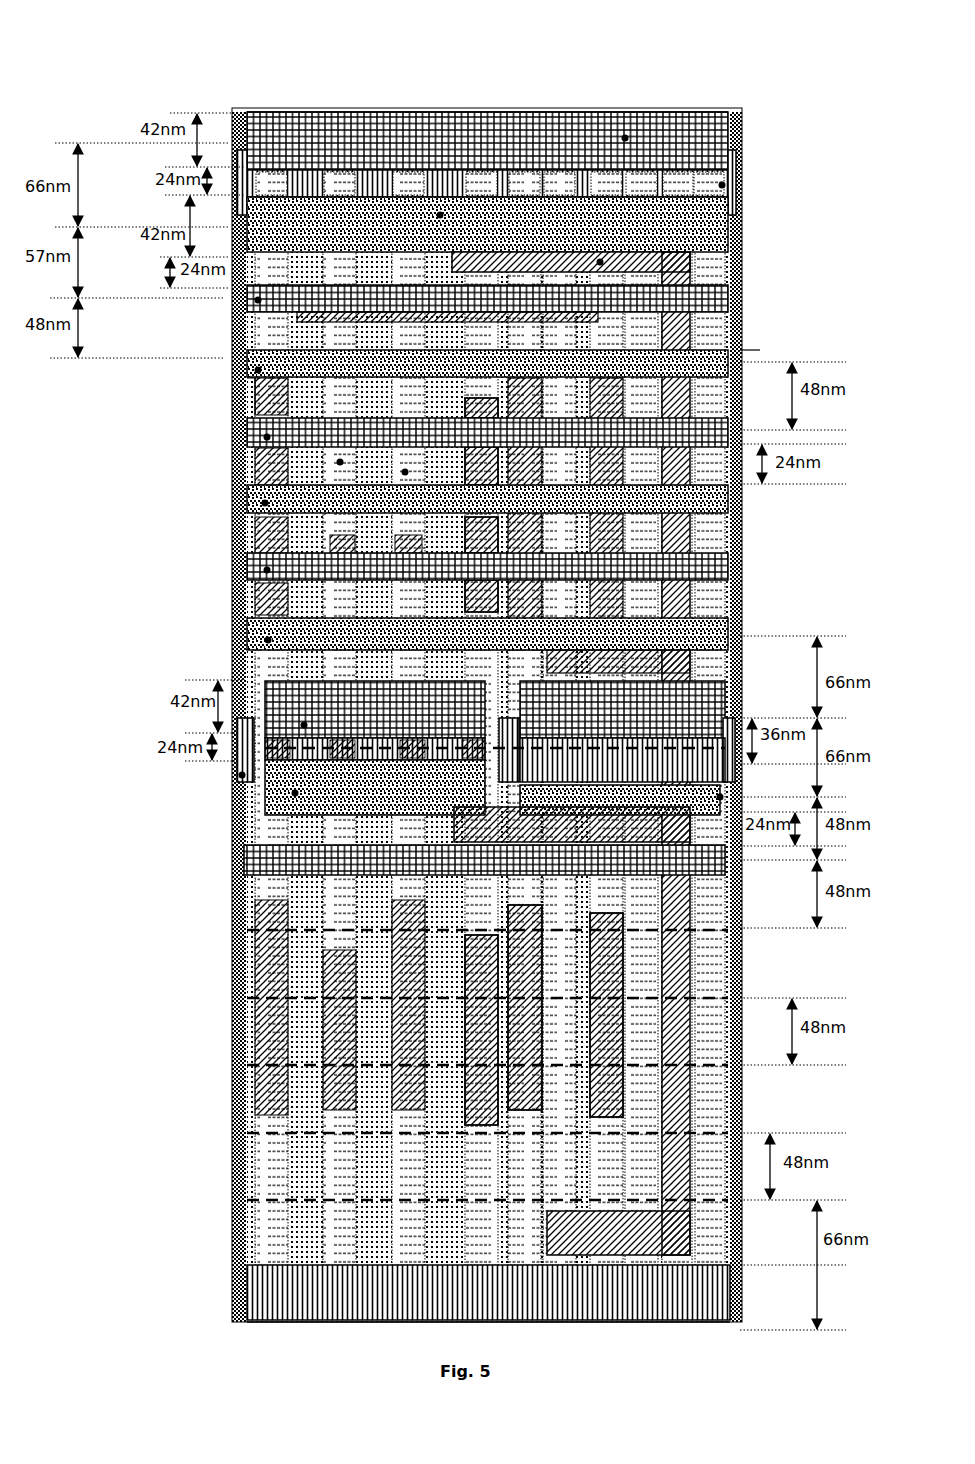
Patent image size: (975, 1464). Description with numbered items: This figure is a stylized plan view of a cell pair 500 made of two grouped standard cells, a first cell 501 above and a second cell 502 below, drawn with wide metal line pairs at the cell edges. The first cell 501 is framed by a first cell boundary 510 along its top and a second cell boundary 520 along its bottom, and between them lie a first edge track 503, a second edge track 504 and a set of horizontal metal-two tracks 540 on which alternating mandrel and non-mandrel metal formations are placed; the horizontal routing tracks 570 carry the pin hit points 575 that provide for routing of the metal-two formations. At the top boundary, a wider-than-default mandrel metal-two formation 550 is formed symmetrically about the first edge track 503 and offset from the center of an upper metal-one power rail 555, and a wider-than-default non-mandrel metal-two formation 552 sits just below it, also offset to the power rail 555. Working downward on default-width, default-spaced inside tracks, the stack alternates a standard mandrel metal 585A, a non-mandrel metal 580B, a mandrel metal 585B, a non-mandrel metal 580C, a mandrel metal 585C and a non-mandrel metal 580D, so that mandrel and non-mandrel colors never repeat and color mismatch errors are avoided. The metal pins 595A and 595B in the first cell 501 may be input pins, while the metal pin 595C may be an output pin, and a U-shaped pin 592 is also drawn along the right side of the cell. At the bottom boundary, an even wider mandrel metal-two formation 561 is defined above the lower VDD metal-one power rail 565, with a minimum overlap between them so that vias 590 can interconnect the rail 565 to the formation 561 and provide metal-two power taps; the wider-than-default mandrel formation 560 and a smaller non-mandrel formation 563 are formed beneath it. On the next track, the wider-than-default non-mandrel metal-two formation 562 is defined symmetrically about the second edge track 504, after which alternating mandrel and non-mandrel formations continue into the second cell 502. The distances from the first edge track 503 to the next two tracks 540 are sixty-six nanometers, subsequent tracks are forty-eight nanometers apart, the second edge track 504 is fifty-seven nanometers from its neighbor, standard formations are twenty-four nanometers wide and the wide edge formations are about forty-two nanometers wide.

The cell pair 500 is at (181, 32).
The first cell 501 is at (103, 99).
The second cell 502 is at (87, 1304).
The first edge track 503 is at (335, 111).
The second edge track 504 is at (246, 978).
The first cell boundary 510 is at (748, 114).
The second cell boundary 520 is at (219, 800).
The M2 tracks 540 is at (246, 1133).
The mandrel M2 metal formation 550 is at (635, 112).
The non-mandrel M2 metal formation 552 is at (463, 110).
The M1 power rail 555 is at (740, 186).
The mandrel M2 metal formation 560 is at (236, 785).
The mandrel M2 metal formation 561 is at (740, 668).
The non-mandrel M2 metal formation 562 is at (236, 855).
The non-mandrel M2 line 563 is at (740, 782).
The M1 power rail 565 is at (238, 776).
The routing tracks 570 is at (400, 472).
The pin hit points 575 is at (740, 530).
The non-mandrel M2 metal 580B is at (250, 372).
The non-mandrel M2 metal 580C is at (250, 500).
The non-mandrel M2 metal 580D is at (250, 640).
The mandrel M2 metal 585A is at (258, 302).
The mandrel M2 metal 585B is at (255, 440).
The mandrel M2 metal 585C is at (250, 570).
The vias 590 is at (736, 612).
The U-shaped pin 592 is at (605, 262).
The metal pin 595A is at (248, 395).
The metal pin 595B is at (248, 408).
The metal pin 595C is at (742, 350).